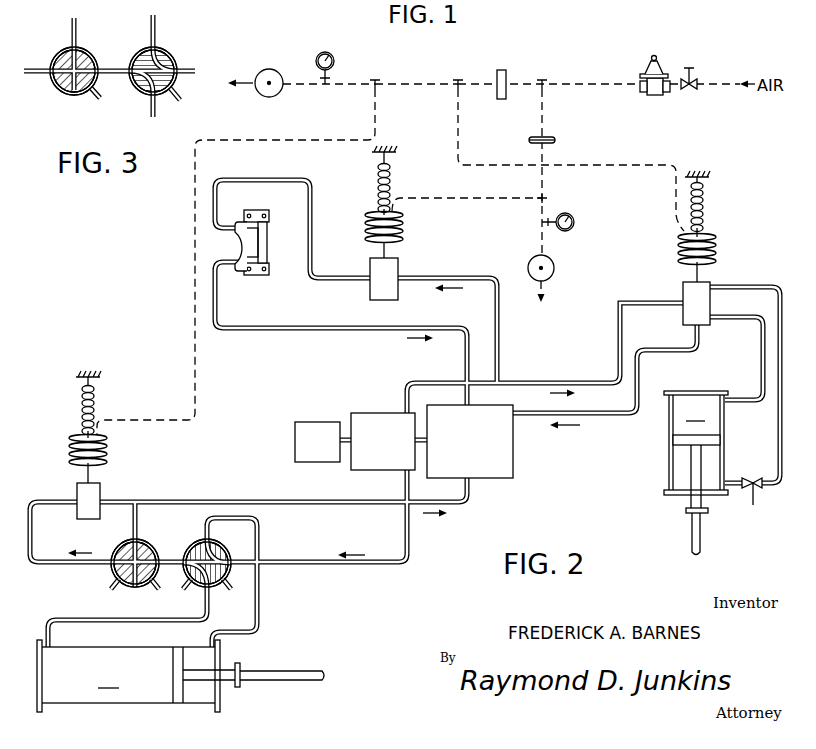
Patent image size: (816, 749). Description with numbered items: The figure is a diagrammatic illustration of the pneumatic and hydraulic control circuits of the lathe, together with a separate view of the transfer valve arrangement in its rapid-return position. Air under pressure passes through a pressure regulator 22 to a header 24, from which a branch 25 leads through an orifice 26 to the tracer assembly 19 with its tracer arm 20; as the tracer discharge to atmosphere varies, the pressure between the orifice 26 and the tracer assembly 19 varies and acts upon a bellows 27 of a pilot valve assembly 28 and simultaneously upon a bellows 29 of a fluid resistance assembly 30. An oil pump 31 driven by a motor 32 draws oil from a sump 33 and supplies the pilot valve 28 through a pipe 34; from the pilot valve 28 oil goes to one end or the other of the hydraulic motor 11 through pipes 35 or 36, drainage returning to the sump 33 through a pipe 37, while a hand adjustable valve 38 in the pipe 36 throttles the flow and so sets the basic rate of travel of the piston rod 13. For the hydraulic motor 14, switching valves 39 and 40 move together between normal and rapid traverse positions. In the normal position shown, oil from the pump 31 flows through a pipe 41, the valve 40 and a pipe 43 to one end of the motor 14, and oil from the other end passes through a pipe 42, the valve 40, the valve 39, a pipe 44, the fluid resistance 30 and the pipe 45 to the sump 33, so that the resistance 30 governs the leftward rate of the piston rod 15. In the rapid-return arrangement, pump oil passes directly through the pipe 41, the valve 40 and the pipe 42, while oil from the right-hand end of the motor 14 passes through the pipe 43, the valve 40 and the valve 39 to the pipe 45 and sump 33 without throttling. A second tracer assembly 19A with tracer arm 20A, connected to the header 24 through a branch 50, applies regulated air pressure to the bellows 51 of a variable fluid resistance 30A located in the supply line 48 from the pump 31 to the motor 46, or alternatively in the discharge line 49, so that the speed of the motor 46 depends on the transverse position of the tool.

In FIG. 2, the hydraulic motor 11 is at (696, 443).
In FIG. 2, the piston rod 13 is at (690, 535).
In FIG. 2, the hydraulic motor 14 is at (128, 676).
In FIG. 2, the piston rod 15 is at (290, 684).
In FIG. 2, the tracer assembly 19 is at (250, 53).
In FIG. 2, the tracer assembly 19A is at (564, 293).
In FIG. 2, the tracer arm 20 is at (269, 85).
In FIG. 2, the tracer arm 20A is at (550, 262).
In FIG. 2, the pressure regulator 22 is at (656, 97).
In FIG. 2, the header 24 is at (552, 88).
In FIG. 2, the branch 25 is at (428, 88).
In FIG. 2, the orifice 26 is at (504, 70).
In FIG. 2, the bellows 27 is at (717, 250).
In FIG. 2, the pilot valve assembly 28 is at (650, 293).
In FIG. 2, the bellows 29 is at (75, 435).
In FIG. 2, the fluid resistance assembly 30 is at (42, 489).
In FIG. 2, the variable fluid resistance 30A is at (326, 270).
In FIG. 2, the oil pump 31 is at (360, 470).
In FIG. 2, the motor 32 is at (303, 462).
In FIG. 2, the sump 33 is at (513, 468).
In FIG. 2, the pipe 34 is at (596, 382).
In FIG. 2, the pipe 35 is at (762, 352).
In FIG. 2, the pipe 36 is at (779, 437).
In FIG. 2, the pipe 37 is at (607, 417).
In FIG. 2, the hand adjustable valve 38 is at (753, 505).
In FIG. 3, the switching valve 39 is at (62, 48).
In FIG. 2, the switching valve 39 is at (113, 580).
In FIG. 3, the switching valve 40 is at (150, 47).
In FIG. 2, the switching valve 40 is at (203, 540).
In FIG. 3, the pipe 41 is at (183, 68).
In FIG. 2, the pipe 41 is at (372, 566).
In FIG. 3, the pipe 42 is at (150, 112).
In FIG. 2, the pipe 42 is at (57, 618).
In FIG. 3, the pipe 43 is at (157, 26).
In FIG. 2, the pipe 43 is at (260, 610).
In FIG. 3, the pipe 44 is at (32, 75).
In FIG. 2, the pipe 44 is at (62, 562).
In FIG. 3, the pipe 45 is at (76, 28).
In FIG. 2, the pipe 45 is at (195, 500).
In FIG. 2, the motor 46 is at (262, 278).
In FIG. 2, the supply line 48 is at (498, 345).
In FIG. 2, the discharge line 49 is at (467, 355).
In FIG. 2, the branch 50 is at (541, 108).
In FIG. 2, the bellows 51 is at (403, 232).